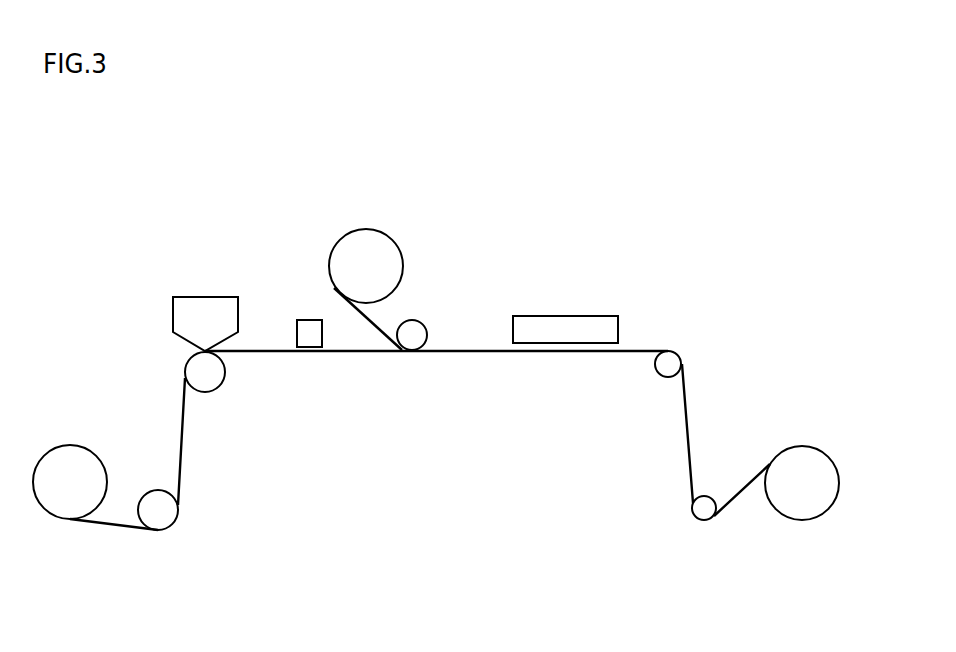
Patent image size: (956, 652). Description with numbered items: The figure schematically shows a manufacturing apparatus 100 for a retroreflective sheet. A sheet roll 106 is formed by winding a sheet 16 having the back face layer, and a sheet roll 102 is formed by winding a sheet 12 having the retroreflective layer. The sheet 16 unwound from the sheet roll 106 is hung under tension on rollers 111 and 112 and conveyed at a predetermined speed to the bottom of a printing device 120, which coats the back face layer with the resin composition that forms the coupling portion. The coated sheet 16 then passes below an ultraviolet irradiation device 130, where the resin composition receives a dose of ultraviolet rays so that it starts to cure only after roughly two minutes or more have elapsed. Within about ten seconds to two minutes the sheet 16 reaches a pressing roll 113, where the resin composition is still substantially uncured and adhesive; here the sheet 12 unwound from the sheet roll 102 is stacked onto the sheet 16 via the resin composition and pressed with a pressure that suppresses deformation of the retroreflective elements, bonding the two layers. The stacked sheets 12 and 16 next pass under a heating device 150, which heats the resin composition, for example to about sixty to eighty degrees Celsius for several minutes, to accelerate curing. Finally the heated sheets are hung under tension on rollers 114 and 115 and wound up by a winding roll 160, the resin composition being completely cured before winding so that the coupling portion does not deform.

The manufacturing apparatus 100 is at (690, 247).
The sheet roll 102 is at (365, 267).
The sheet roll 106 is at (70, 467).
The sheet 12 is at (382, 323).
The sheet 16 is at (108, 527).
The roller 111 is at (157, 508).
The roller 112 is at (204, 374).
The pressing roll 113 is at (412, 333).
The roller 114 is at (668, 362).
The roller 115 is at (704, 507).
The printing device 120 is at (200, 295).
The ultraviolet irradiation device 130 is at (307, 333).
The heating device 150 is at (555, 332).
The winding roll 160 is at (802, 477).